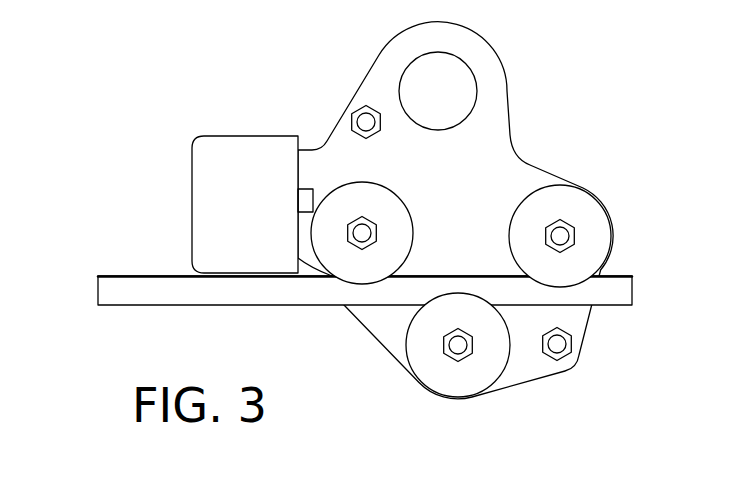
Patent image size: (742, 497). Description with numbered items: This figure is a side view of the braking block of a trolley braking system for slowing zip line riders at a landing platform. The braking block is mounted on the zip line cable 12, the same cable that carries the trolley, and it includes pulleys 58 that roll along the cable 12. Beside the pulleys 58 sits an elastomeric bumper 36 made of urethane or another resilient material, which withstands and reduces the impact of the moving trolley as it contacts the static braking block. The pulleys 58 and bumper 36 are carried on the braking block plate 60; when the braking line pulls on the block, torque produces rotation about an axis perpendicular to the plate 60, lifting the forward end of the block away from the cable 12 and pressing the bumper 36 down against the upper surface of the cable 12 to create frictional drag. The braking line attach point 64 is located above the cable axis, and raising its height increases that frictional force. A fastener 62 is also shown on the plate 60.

The zip line cable 12 is at (160, 293).
The elastomeric bumper 36 is at (192, 178).
The pulleys 58 is at (593, 233).
The braking block plate 60 is at (526, 163).
The fastener 62 is at (560, 350).
The braking line attach point 64 is at (452, 77).